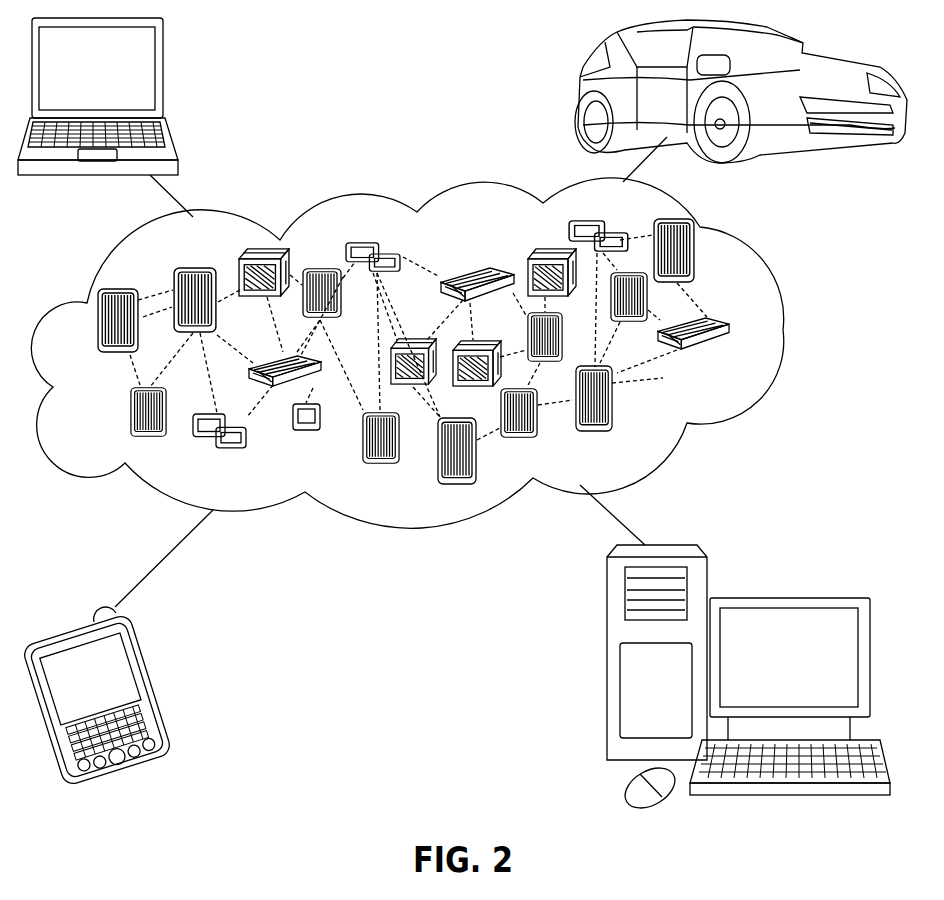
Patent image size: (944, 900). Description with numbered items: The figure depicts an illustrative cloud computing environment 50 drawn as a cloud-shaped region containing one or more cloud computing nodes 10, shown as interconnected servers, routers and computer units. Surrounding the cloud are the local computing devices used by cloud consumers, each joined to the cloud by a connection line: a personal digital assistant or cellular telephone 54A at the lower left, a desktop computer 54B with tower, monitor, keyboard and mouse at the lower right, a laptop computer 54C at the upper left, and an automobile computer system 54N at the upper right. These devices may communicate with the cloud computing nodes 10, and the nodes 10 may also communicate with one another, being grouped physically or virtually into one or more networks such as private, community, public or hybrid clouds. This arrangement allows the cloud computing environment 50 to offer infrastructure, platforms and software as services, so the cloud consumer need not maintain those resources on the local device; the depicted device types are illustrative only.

The cloud computing node 10 is at (742, 362).
The cloud computing environment 50 is at (785, 331).
The personal digital assistant (PDA) or cellular telephone 54A is at (155, 687).
The desktop computer 54B is at (783, 598).
The laptop computer 54C is at (163, 77).
The automobile computer system 54N is at (578, 92).